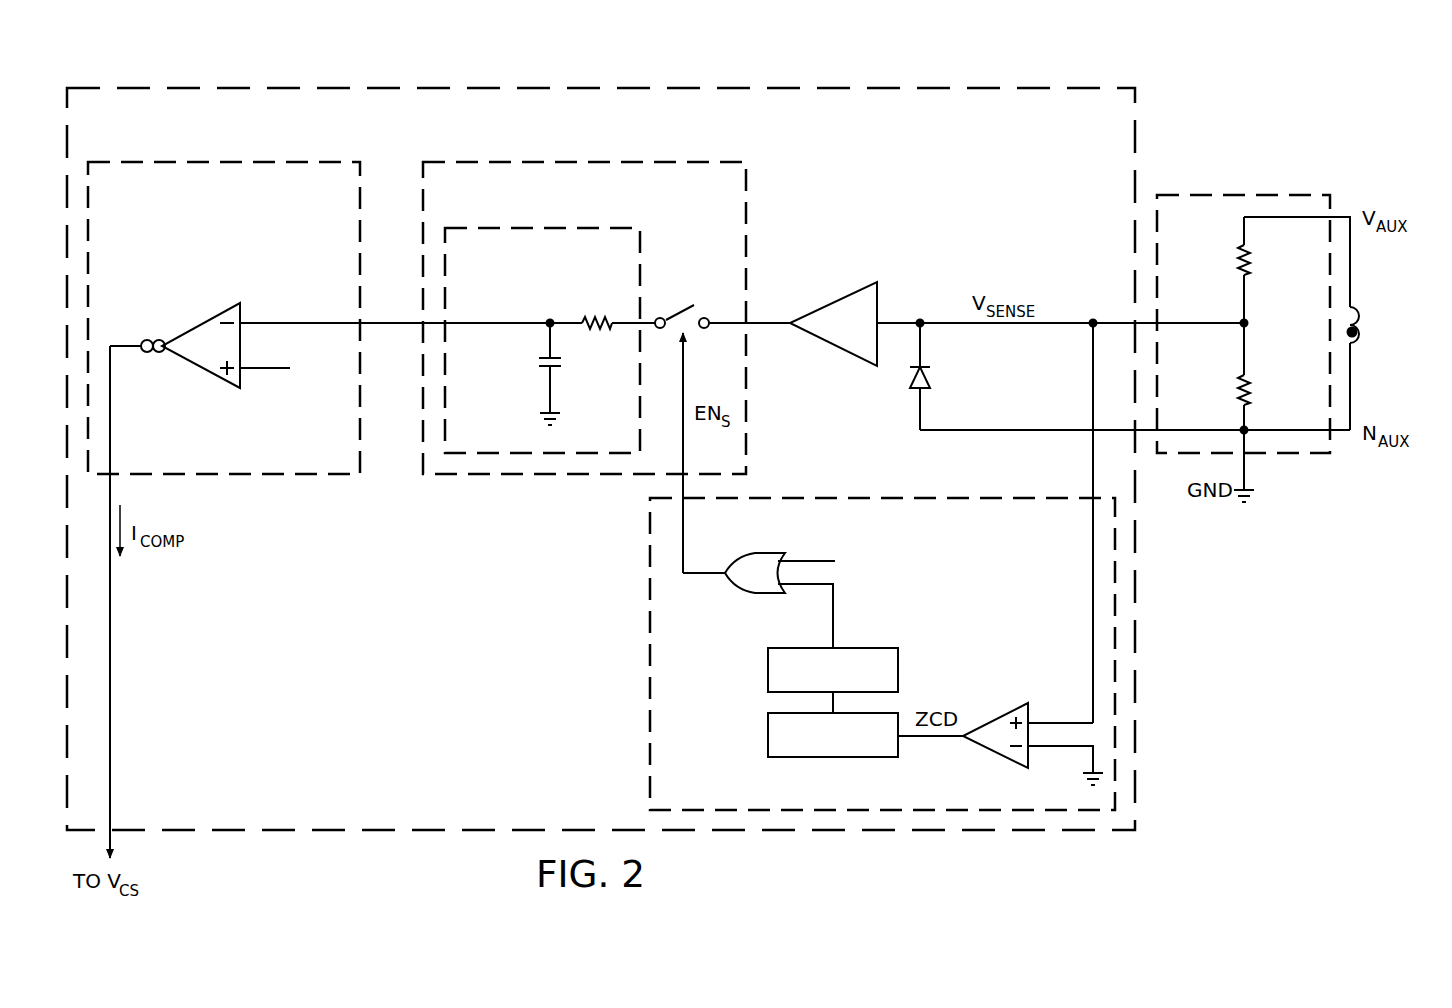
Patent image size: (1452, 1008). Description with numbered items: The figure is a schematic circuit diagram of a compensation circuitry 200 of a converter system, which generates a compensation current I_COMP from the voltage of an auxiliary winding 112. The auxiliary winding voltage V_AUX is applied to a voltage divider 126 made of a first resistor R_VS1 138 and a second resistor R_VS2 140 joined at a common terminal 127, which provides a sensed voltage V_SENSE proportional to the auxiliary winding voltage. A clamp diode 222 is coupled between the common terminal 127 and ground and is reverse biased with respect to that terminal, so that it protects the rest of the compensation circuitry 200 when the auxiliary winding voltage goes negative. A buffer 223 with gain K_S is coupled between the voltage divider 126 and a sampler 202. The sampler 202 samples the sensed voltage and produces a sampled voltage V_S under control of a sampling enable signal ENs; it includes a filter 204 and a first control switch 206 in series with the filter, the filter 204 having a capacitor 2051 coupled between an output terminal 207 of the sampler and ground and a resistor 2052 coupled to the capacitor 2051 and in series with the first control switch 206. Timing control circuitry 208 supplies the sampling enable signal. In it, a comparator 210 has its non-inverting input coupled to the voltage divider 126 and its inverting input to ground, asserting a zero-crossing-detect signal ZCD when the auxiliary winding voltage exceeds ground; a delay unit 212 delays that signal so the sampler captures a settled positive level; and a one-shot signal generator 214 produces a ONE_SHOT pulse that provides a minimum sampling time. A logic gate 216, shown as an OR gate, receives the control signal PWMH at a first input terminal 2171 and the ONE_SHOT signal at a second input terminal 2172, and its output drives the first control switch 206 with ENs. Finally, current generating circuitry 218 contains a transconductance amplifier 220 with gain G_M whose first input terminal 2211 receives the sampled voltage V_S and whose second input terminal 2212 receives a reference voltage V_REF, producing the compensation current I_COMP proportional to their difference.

The compensation circuitry 200 is at (910, 87).
The current generating circuitry 218 is at (172, 160).
The transconductance amplifier 220 is at (198, 384).
The first input terminal 2211 is at (270, 320).
The second input terminal 2212 is at (270, 373).
The output terminal of the sampler 207 is at (400, 320).
The sampler 202 is at (536, 160).
The filter 204 is at (503, 226).
The resistor 2052 is at (594, 320).
The capacitor 2051 is at (540, 362).
The first control switch 206 is at (681, 309).
The buffer 223 is at (832, 306).
The clamp diode 222 is at (936, 378).
The voltage divider 126 is at (1272, 191).
The first resistor R_VS1 138 is at (1251, 258).
The common terminal 127 is at (1250, 320).
The second resistor R_VS2 140 is at (1251, 389).
The auxiliary winding 112 is at (1370, 316).
The timing control circuitry 208 is at (648, 727).
The logic gate 216 is at (745, 598).
The first input terminal 2171 is at (802, 557).
The second input terminal 2172 is at (803, 596).
The one-shot signal generator 214 is at (766, 672).
The delay unit 212 is at (766, 745).
The comparator 210 is at (996, 760).